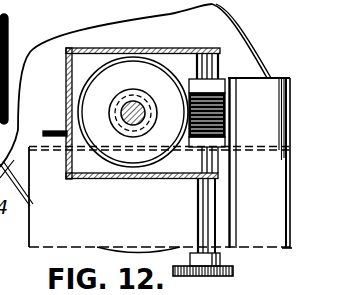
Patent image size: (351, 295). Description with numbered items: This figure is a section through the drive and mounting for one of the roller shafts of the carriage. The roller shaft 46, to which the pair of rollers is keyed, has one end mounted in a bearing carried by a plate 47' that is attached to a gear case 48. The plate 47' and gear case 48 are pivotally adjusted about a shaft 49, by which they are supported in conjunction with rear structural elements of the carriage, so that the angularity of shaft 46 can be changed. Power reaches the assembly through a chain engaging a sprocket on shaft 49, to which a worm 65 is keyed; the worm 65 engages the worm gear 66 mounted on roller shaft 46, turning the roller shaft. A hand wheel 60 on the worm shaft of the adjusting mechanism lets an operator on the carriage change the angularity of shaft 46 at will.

The shaft 46 is at (134, 108).
The plate 47' is at (47, 116).
The gear case 48 is at (66, 74).
The shaft 49 is at (199, 219).
The hand wheel 60 is at (8, 30).
The worm 65 is at (218, 98).
The worm gear 66 is at (142, 70).